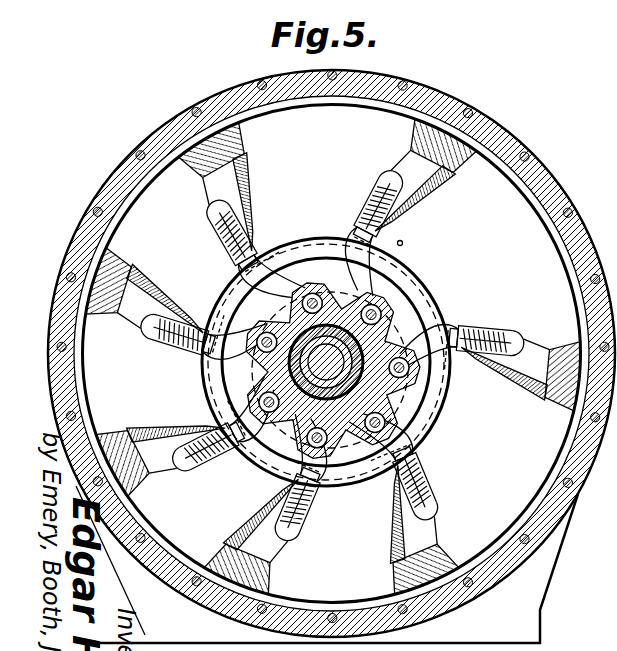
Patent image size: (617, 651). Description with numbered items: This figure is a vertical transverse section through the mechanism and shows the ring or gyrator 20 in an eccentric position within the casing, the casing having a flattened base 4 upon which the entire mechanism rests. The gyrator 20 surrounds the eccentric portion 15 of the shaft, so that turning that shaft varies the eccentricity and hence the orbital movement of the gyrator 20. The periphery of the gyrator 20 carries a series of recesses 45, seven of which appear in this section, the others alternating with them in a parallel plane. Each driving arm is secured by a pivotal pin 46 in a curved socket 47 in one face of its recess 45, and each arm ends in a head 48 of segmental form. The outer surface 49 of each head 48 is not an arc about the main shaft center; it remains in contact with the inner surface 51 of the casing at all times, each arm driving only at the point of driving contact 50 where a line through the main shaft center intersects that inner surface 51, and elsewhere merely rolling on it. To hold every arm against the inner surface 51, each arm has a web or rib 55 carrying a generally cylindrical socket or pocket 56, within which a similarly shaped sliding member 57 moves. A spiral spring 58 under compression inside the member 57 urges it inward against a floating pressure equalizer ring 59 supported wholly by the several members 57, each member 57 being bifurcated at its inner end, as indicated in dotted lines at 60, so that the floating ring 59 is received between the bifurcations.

The flattened base 4 is at (548, 626).
The eccentric portion 15 is at (300, 315).
The ring or gyrator 20 is at (425, 406).
The recess 45 is at (378, 305).
The pivotal pin 46 is at (250, 328).
The curved socket 47 is at (381, 291).
The head 48 is at (491, 127).
The outer surface 49 is at (433, 108).
The point of driving contact 50 is at (404, 241).
The inner surface 51 is at (156, 147).
The web or rib 55 is at (437, 188).
The socket or pocket 56 is at (517, 333).
The sliding member 57 is at (503, 328).
The spiral spring 58 is at (480, 328).
The floating pressure equalizer ring 59 is at (283, 253).
The bifurcation 60 is at (455, 370).